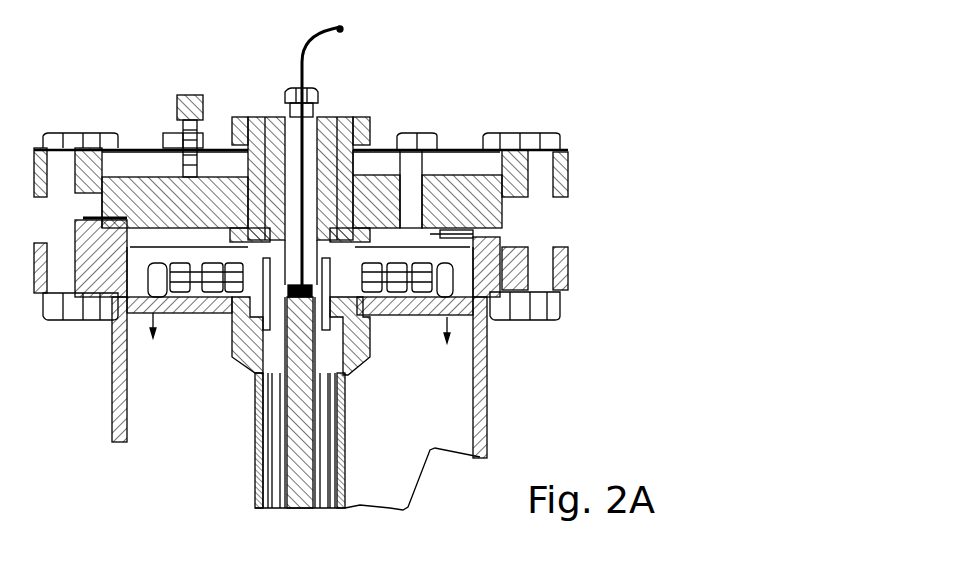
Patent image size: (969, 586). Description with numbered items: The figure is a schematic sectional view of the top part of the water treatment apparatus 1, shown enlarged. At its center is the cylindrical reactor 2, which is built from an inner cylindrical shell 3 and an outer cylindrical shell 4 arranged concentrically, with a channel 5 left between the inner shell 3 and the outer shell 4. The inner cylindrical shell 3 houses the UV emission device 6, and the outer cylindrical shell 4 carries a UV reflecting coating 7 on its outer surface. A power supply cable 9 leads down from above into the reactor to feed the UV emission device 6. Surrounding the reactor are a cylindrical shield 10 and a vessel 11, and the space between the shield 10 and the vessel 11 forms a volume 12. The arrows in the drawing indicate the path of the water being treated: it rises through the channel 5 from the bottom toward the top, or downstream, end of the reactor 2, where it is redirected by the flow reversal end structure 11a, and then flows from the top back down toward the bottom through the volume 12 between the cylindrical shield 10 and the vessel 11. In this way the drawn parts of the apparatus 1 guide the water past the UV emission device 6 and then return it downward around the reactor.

The apparatus 1 is at (568, 92).
The cylindrical reactor 2 is at (348, 440).
The inner cylindrical shell 3 is at (282, 475).
The outer cylindrical shell 4 is at (257, 455).
The channel 5 is at (278, 463).
The UV emission device 6 is at (303, 397).
The UV reflecting coating 7 is at (257, 449).
The power supply cable 9 is at (345, 39).
The cylindrical shield 10 is at (257, 505).
The vessel 11 is at (112, 363).
The flow reversal end structure 11a is at (466, 243).
The volume 12 is at (207, 409).